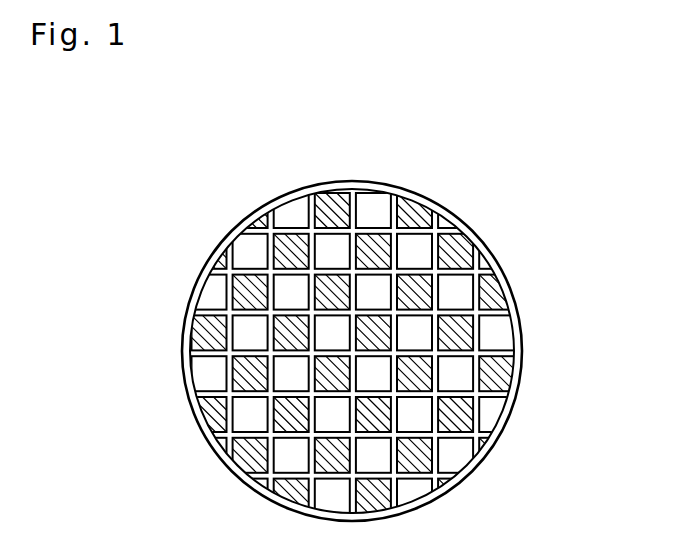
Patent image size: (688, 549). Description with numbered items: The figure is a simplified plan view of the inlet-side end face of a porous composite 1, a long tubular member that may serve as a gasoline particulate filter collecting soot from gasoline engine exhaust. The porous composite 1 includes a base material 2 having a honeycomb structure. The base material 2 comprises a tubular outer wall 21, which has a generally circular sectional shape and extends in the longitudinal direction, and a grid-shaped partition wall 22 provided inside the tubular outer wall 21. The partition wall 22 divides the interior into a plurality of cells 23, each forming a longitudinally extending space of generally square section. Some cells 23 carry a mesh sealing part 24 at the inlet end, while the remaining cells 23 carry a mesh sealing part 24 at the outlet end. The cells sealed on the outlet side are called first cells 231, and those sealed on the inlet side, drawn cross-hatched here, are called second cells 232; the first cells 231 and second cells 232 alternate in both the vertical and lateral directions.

The porous composite 1 is at (207, 160).
The base material 2 is at (541, 206).
The tubular outer wall 21 is at (452, 222).
The partition wall 22 is at (473, 270).
The cells 23 is at (607, 350).
The first cells 231 is at (462, 287).
The second cells 232 is at (233, 289).
The mesh sealing part 24 is at (250, 288).